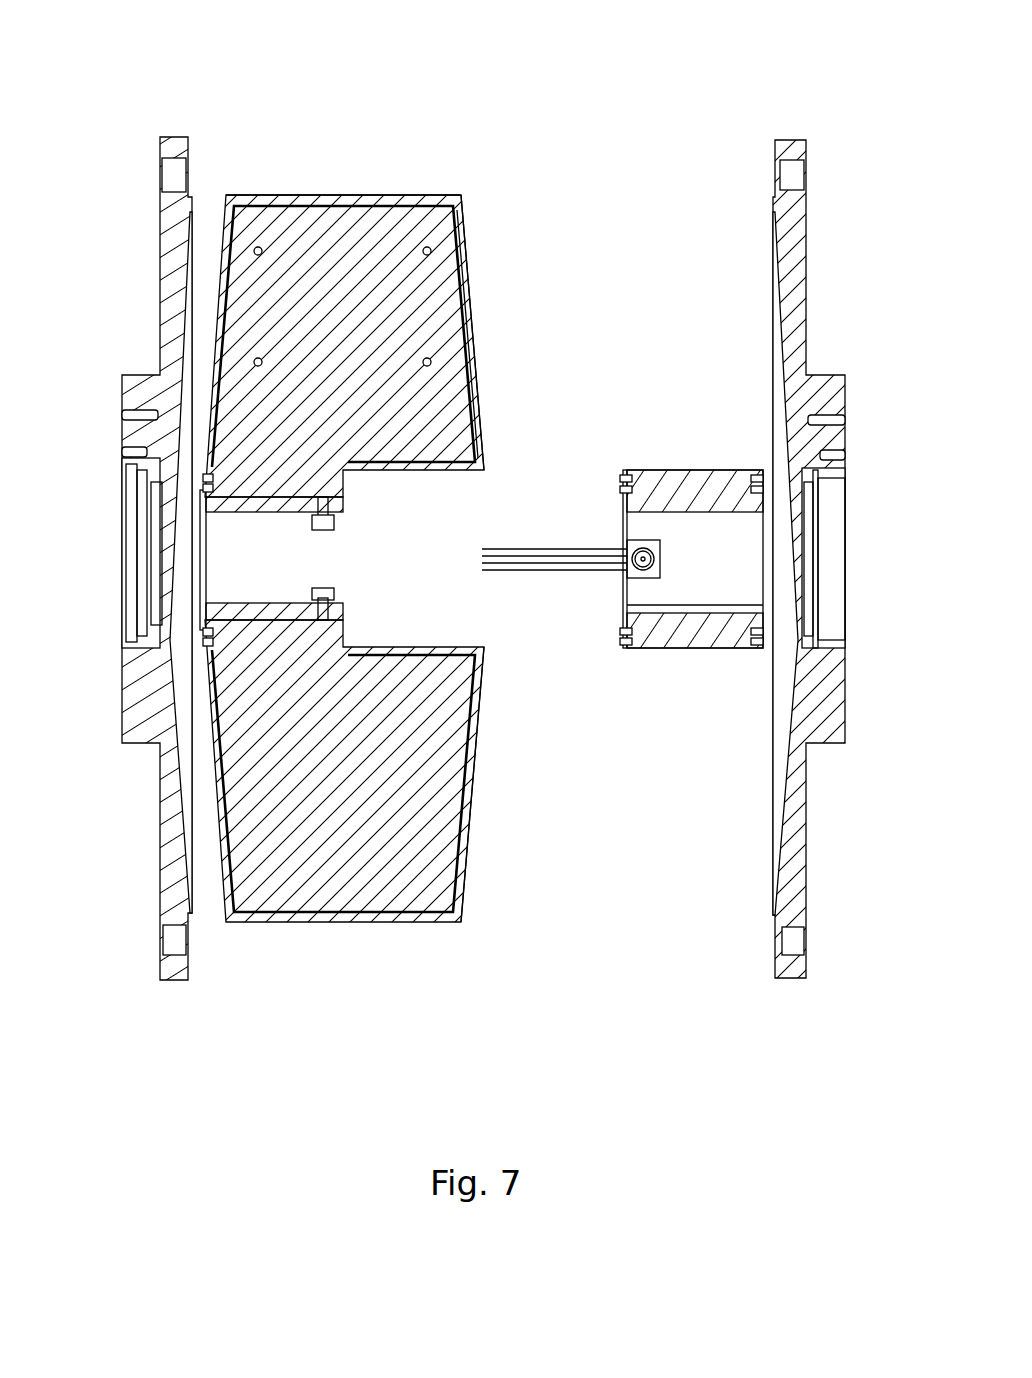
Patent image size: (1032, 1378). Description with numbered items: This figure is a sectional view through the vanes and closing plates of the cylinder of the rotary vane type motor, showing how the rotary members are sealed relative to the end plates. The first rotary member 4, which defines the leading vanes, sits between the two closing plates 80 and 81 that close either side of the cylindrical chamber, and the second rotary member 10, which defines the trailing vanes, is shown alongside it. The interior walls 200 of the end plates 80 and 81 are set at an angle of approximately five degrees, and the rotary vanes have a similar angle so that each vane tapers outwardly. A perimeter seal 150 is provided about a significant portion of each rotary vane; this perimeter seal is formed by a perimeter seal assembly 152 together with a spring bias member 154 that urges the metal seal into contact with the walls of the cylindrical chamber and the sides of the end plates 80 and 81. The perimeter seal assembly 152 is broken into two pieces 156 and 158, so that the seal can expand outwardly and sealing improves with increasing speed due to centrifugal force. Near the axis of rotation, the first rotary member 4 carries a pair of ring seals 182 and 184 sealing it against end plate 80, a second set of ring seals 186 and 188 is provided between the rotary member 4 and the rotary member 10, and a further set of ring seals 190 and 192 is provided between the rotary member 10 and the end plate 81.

The first rotary member 4 is at (361, 158).
The perimeter seal assembly 152 is at (408, 197).
The perimeter seal 150 is at (461, 197).
The first piece of perimeter seal assembly 156 is at (468, 290).
The spring bias member 154 is at (470, 375).
The second piece of perimeter seal assembly 158 is at (465, 450).
The closing plate 80 is at (170, 293).
The closing plate 81 is at (790, 300).
The interior wall 200 is at (183, 370).
The ring seal 182 is at (203, 478).
The ring seal 184 is at (203, 487).
The second rotary member 10 is at (585, 505).
The ring seal 186 is at (622, 640).
The ring seal 188 is at (622, 632).
The ring seal 190 is at (760, 645).
The ring seal 192 is at (757, 647).